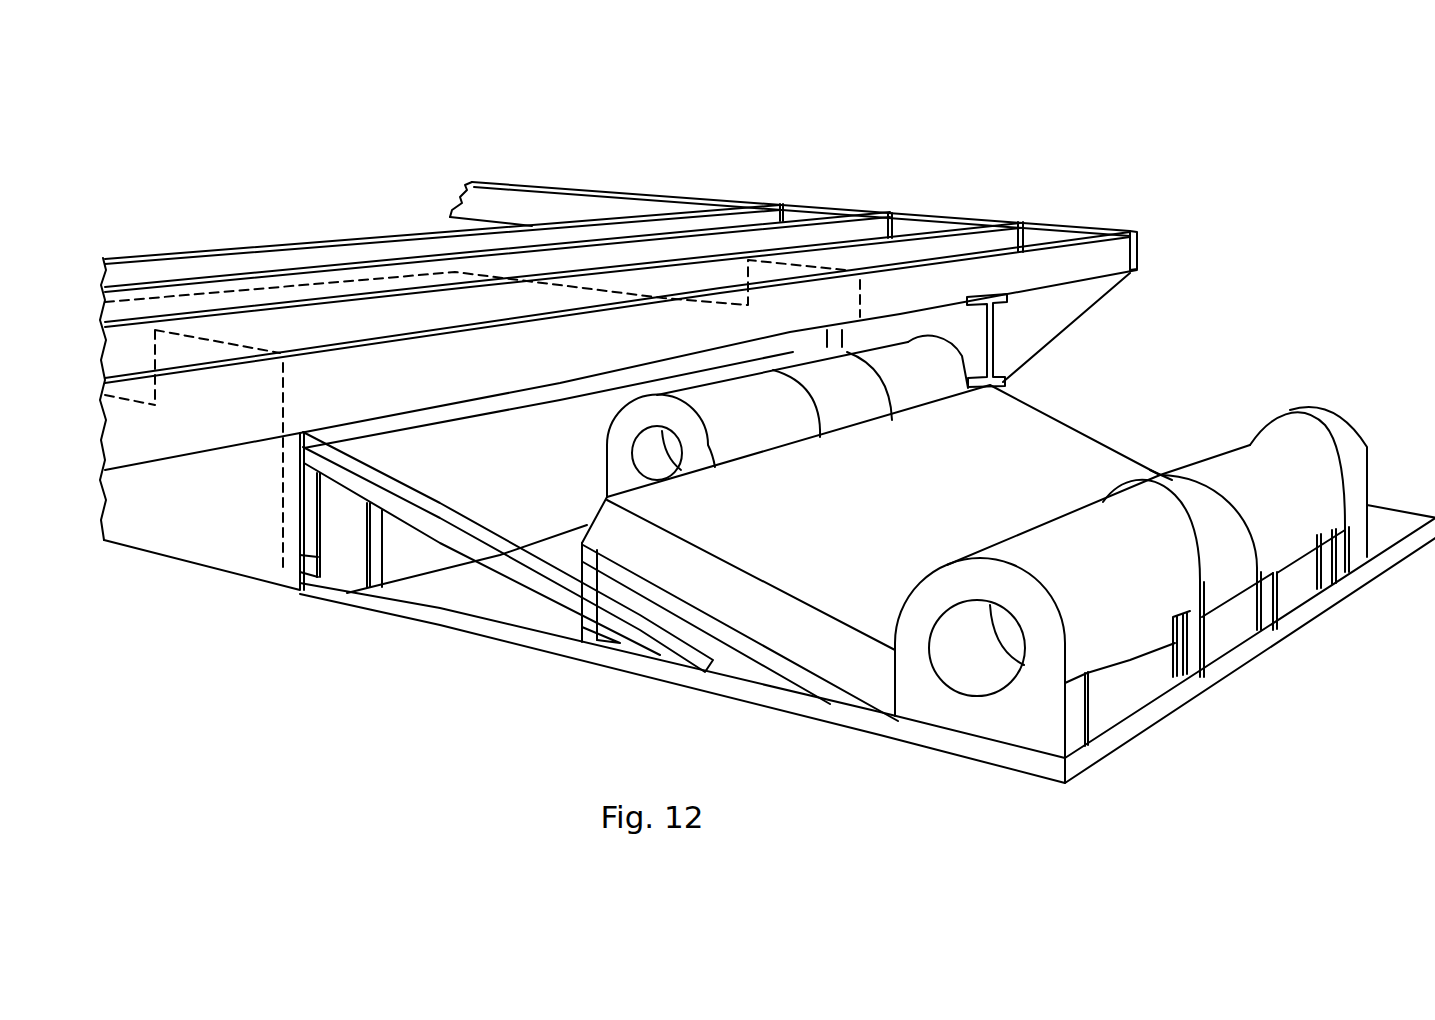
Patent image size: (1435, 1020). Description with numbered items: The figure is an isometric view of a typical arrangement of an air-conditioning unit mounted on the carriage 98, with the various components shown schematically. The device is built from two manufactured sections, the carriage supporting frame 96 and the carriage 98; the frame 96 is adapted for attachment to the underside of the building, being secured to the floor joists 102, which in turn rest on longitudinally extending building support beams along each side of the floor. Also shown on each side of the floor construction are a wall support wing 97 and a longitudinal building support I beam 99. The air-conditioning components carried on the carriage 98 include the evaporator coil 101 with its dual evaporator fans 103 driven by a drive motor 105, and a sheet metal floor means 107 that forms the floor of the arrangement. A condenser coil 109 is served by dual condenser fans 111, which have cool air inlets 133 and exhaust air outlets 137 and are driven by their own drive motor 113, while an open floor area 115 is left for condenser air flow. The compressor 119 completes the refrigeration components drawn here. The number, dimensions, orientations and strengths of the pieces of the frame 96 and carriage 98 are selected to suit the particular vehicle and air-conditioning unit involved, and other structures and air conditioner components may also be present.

The carriage supporting frame 96 is at (280, 467).
The wall support wing 97 is at (1097, 299).
The carriage 98 is at (369, 611).
The longitudinal building support I beam 99 is at (1000, 348).
The evaporator coil 101 is at (518, 496).
The floor joists 102 is at (830, 216).
The dual evaporator fans 103 is at (833, 451).
The drive motor 105 is at (853, 408).
The sheet metal floor means 107 is at (497, 601).
The condenser coil 109 is at (862, 554).
The dual condenser fans 111 is at (1161, 464).
The drive motor 113 is at (1228, 627).
The open floor area 115 is at (783, 678).
The compressor 119 is at (1340, 430).
The cool air inlets 133 is at (976, 648).
The exhaust air outlets 137 is at (1122, 700).